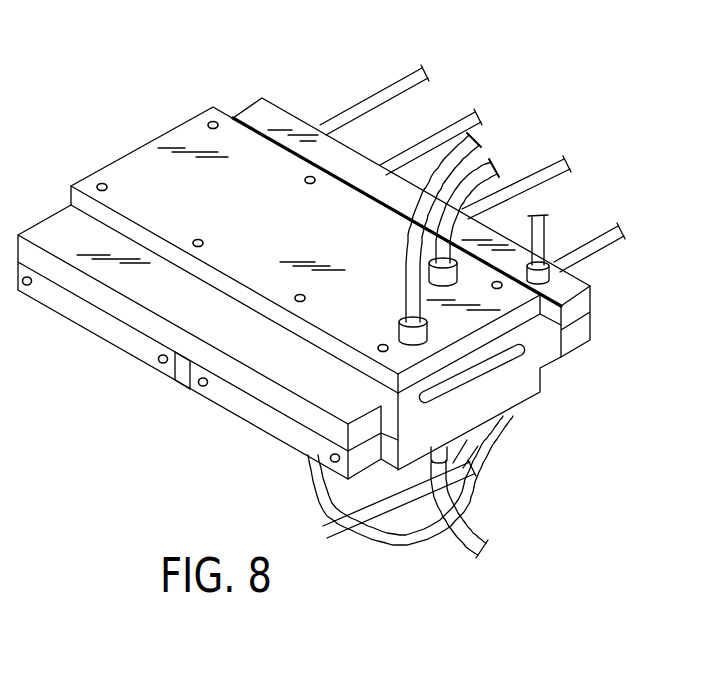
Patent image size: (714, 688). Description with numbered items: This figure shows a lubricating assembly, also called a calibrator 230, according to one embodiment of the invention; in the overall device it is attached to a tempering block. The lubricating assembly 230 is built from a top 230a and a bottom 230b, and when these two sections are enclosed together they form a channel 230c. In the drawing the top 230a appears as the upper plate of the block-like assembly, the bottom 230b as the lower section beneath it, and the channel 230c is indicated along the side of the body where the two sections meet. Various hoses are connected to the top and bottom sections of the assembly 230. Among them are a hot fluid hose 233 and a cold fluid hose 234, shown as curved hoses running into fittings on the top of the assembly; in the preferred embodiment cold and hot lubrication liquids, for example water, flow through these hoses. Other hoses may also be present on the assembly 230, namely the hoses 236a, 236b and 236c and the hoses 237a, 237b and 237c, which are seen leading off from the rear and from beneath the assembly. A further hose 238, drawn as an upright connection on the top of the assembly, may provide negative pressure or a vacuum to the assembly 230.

The lubricating assembly 230 is at (166, 404).
The top 230a is at (297, 235).
The bottom 230b is at (98, 343).
The channel 230c is at (485, 372).
The hot fluid hose 233 is at (478, 142).
The cold fluid hose 234 is at (497, 170).
The hose 236a is at (468, 122).
The hose 236b is at (614, 228).
The hose 236c is at (477, 523).
The hose 237a is at (392, 88).
The hose 237b is at (563, 165).
The hose 237c is at (341, 533).
The hose 238 is at (540, 240).